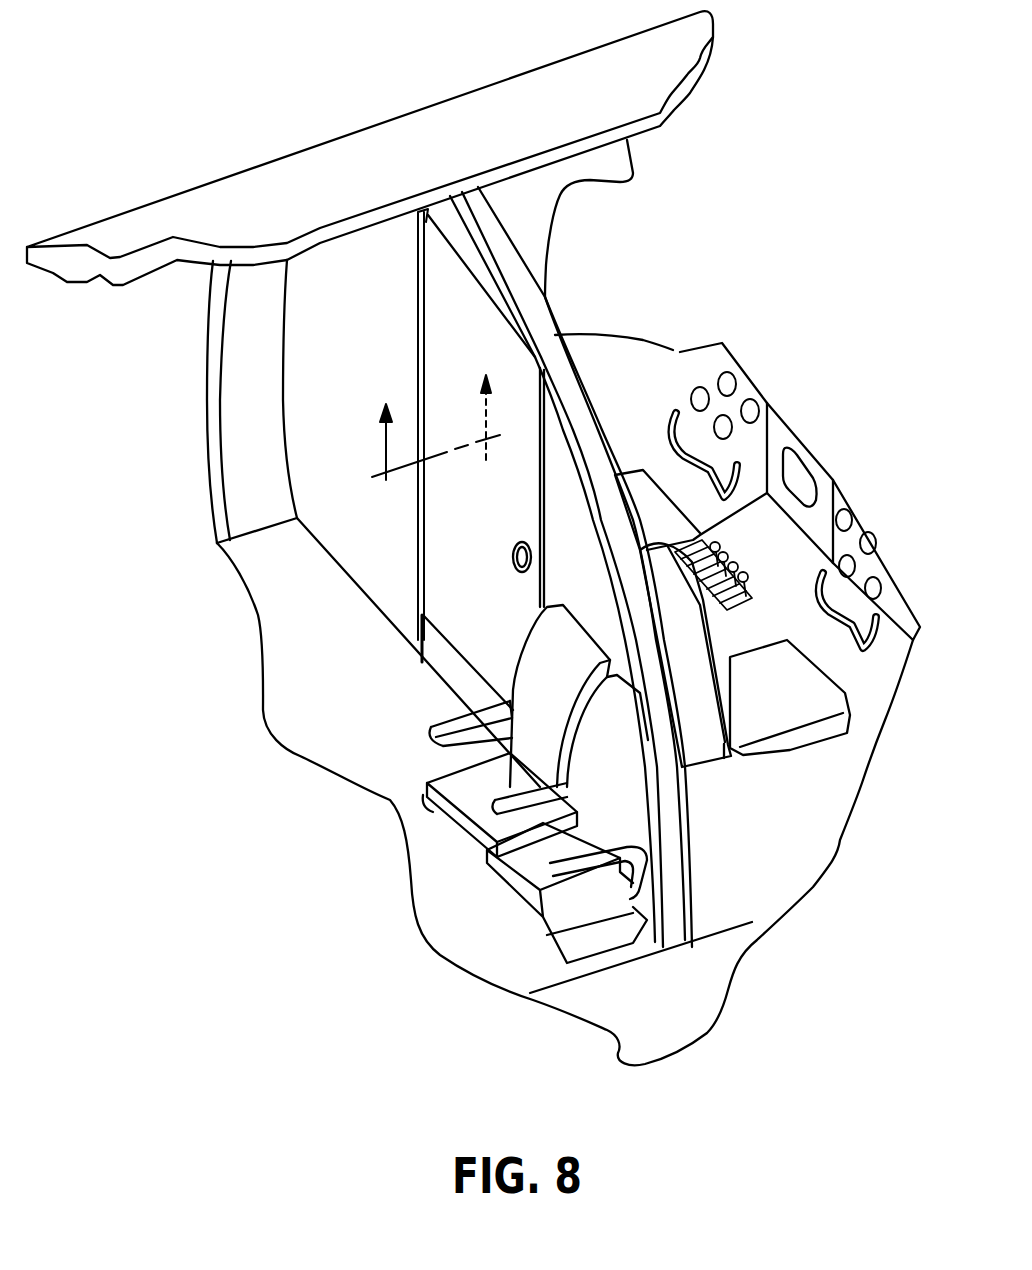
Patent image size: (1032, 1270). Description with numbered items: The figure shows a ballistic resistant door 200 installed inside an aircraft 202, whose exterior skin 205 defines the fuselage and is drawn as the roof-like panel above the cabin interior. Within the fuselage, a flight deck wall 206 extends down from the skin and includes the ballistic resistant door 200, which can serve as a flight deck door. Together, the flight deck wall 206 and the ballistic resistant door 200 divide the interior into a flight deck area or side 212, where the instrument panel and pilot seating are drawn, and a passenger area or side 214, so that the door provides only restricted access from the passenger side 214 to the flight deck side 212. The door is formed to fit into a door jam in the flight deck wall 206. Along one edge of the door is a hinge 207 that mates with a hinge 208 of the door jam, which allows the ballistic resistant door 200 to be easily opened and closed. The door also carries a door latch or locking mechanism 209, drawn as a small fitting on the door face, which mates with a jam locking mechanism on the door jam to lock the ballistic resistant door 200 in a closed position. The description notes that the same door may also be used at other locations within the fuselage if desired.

The ballistic resistant door 200 is at (465, 557).
The aircraft 202 is at (358, 70).
The exterior skin 205 is at (486, 108).
The flight deck wall 206 is at (350, 412).
The hinge 207 is at (420, 298).
The hinge of the door jam 208 is at (418, 250).
The door latch or locking mechanism 209 is at (513, 573).
The flight deck area or side 212 is at (693, 354).
The passenger area or side 214 is at (292, 595).